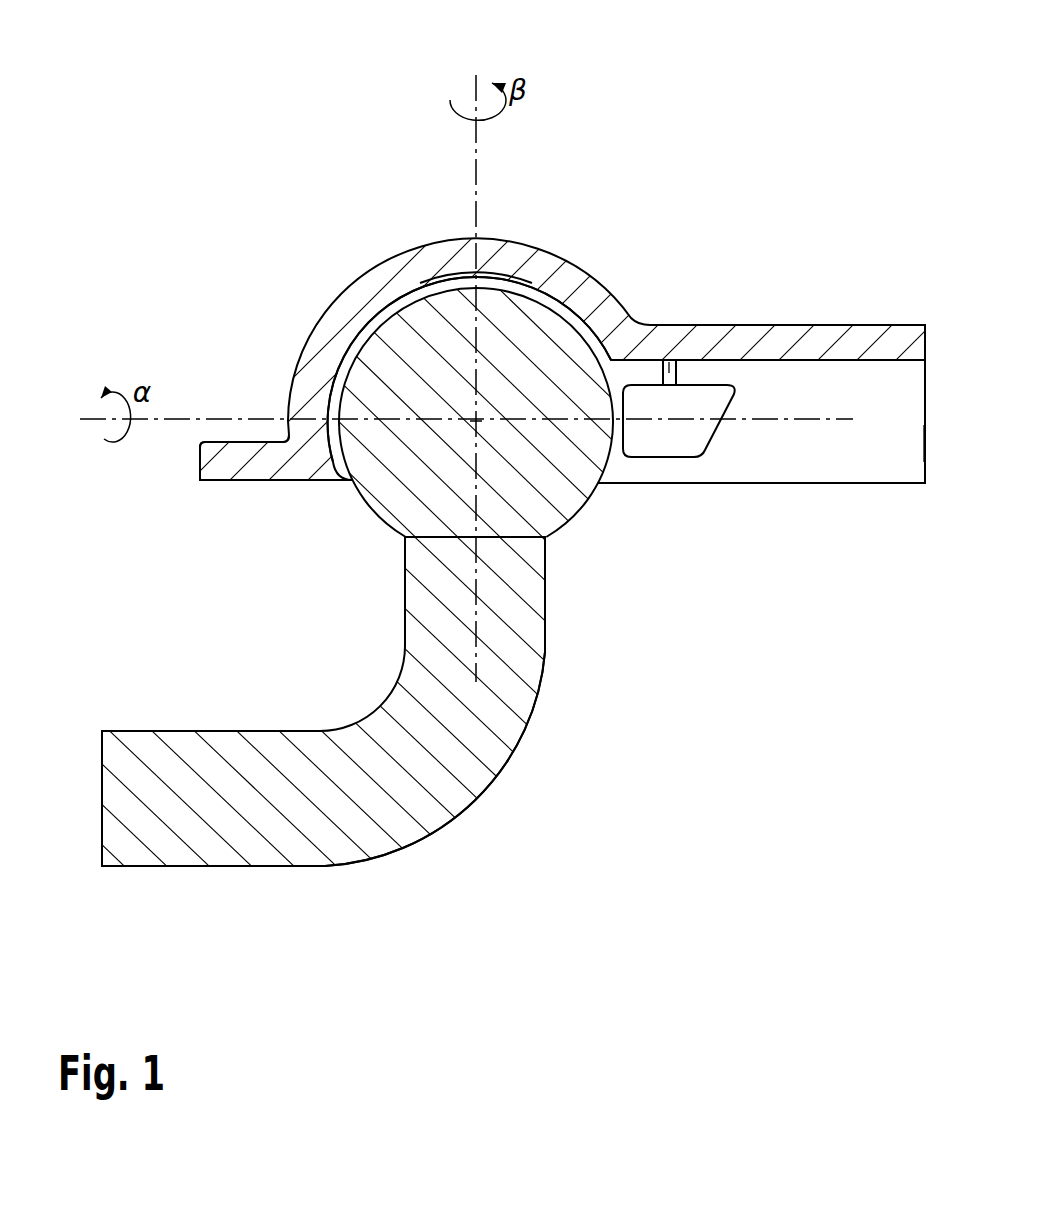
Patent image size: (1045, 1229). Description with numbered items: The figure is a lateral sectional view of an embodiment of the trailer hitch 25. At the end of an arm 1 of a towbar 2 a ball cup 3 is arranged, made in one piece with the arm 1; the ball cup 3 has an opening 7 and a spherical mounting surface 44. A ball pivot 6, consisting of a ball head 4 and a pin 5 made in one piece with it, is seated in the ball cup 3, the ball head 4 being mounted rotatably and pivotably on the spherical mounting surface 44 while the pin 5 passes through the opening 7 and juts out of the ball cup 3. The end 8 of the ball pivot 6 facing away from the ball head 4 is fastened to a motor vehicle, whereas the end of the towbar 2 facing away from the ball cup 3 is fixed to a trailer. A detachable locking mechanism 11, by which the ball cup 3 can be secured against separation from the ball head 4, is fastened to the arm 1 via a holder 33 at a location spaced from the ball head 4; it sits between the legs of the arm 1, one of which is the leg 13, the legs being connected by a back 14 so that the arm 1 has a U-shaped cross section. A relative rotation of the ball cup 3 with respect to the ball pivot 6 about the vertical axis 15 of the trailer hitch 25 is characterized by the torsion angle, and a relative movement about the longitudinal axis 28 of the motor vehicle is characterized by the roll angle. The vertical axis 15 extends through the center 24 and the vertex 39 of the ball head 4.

The arm 1 is at (747, 325).
The towbar 2 is at (783, 485).
The ball cup 3 is at (449, 238).
The ball head 4 is at (402, 503).
The pin 5 is at (480, 748).
The ball pivot 6 is at (437, 827).
The opening 7 is at (337, 483).
The end 8 is at (100, 778).
The locking mechanism 11 is at (672, 442).
The leg 13 is at (867, 460).
The back 14 is at (853, 342).
The vertical axis 15 is at (475, 157).
The center 24 is at (473, 420).
The trailer hitch 25 is at (568, 198).
The longitudinal axis 28 is at (213, 418).
The holder 33 is at (671, 375).
The vertex 39 is at (477, 278).
The spherical mounting surface 44 is at (510, 277).